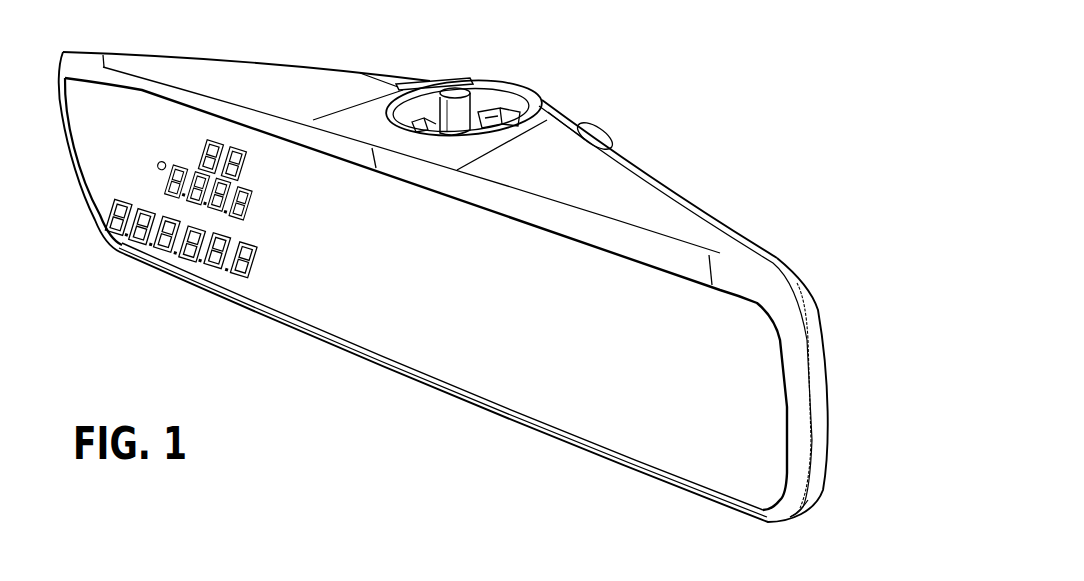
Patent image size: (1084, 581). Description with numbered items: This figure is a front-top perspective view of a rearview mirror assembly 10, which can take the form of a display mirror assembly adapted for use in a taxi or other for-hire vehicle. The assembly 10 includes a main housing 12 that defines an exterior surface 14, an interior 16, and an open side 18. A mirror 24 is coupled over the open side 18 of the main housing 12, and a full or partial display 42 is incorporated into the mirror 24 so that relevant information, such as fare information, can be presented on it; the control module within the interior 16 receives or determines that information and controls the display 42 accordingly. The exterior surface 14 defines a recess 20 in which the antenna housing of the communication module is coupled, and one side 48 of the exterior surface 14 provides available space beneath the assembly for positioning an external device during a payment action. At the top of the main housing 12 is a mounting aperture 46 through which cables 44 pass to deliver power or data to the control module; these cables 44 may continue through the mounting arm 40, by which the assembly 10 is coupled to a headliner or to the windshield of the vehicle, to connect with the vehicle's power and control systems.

The rearview mirror assembly 10 is at (695, 120).
The main housing 12 is at (785, 250).
The exterior surface 14 is at (670, 217).
The interior 16 is at (493, 107).
The open side 18 is at (807, 340).
The recess 20 is at (784, 534).
The mirror 24 is at (650, 422).
The mounting arm 40 is at (442, 412).
The display 42 is at (300, 250).
The cables 44 is at (485, 90).
The mounting aperture 46 is at (435, 78).
The side 48 is at (438, 402).